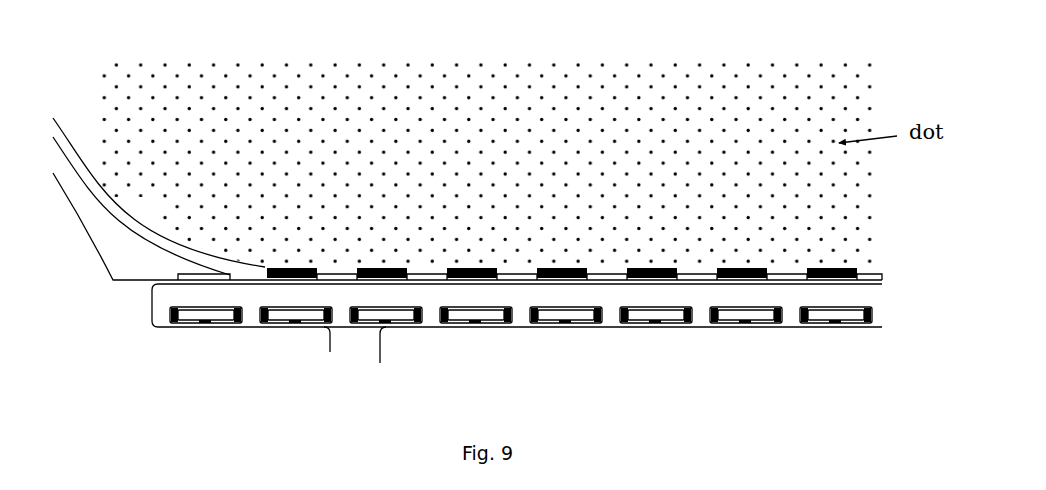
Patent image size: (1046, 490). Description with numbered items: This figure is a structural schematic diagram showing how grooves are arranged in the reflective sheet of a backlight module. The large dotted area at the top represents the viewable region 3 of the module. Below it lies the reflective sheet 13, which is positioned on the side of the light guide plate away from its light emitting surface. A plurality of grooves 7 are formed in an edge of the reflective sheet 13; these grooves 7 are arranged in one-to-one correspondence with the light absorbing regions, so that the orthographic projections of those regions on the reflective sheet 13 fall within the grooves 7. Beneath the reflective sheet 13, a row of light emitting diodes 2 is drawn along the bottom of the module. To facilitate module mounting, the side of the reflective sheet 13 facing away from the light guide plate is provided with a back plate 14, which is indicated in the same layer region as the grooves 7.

The light emitting diode 2 is at (478, 315).
The viewable region 3 is at (874, 207).
The groove 7 is at (638, 279).
The reflective sheet 13 is at (530, 304).
The back plate 14 is at (672, 281).